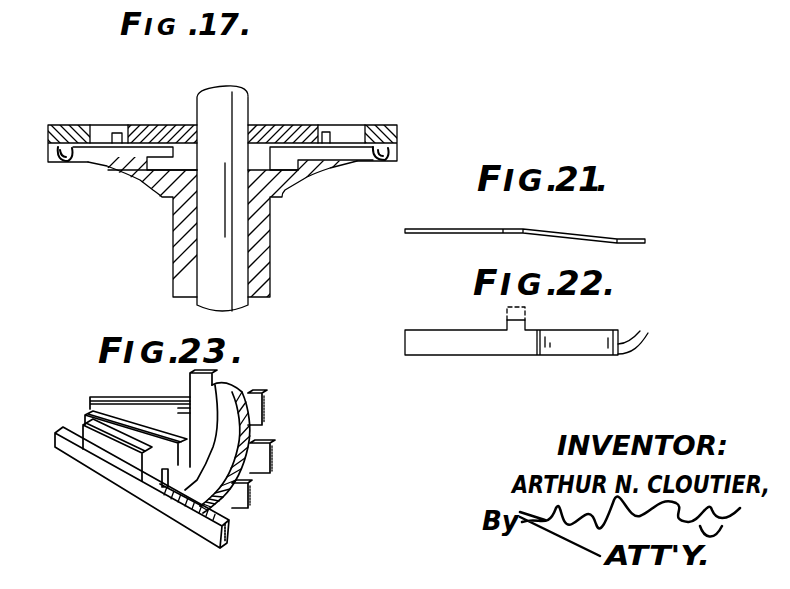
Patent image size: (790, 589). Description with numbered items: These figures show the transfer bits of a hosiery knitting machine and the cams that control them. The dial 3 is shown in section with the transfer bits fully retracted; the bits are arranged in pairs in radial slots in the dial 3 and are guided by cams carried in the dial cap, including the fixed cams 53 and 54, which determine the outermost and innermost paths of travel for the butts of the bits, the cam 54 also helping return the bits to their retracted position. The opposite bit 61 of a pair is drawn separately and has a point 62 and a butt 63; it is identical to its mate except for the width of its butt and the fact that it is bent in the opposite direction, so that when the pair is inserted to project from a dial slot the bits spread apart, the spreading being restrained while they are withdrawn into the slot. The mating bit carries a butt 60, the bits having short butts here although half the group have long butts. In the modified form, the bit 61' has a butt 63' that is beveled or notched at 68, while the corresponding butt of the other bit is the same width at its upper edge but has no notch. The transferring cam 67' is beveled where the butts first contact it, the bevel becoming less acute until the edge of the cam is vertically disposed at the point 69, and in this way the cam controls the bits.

In FIG. 17, the dial 3 is at (262, 228).
In FIG. 17, the cam 53 is at (289, 124).
In FIG. 17, the cam 54 is at (383, 124).
In FIG. 21, the bit 61 is at (525, 226).
In FIG. 22, the bit 61 is at (511, 331).
In FIG. 22, the point 62 is at (643, 339).
In FIG. 22, the butt 63 is at (496, 318).
In FIG. 23, the butt 60 is at (213, 378).
In FIG. 23, the bit 61' is at (140, 394).
In FIG. 23, the butt 63' is at (274, 445).
In FIG. 23, the cam 67' is at (218, 501).
In FIG. 23, the notch 68 is at (150, 493).
In FIG. 23, the point 69 is at (227, 428).